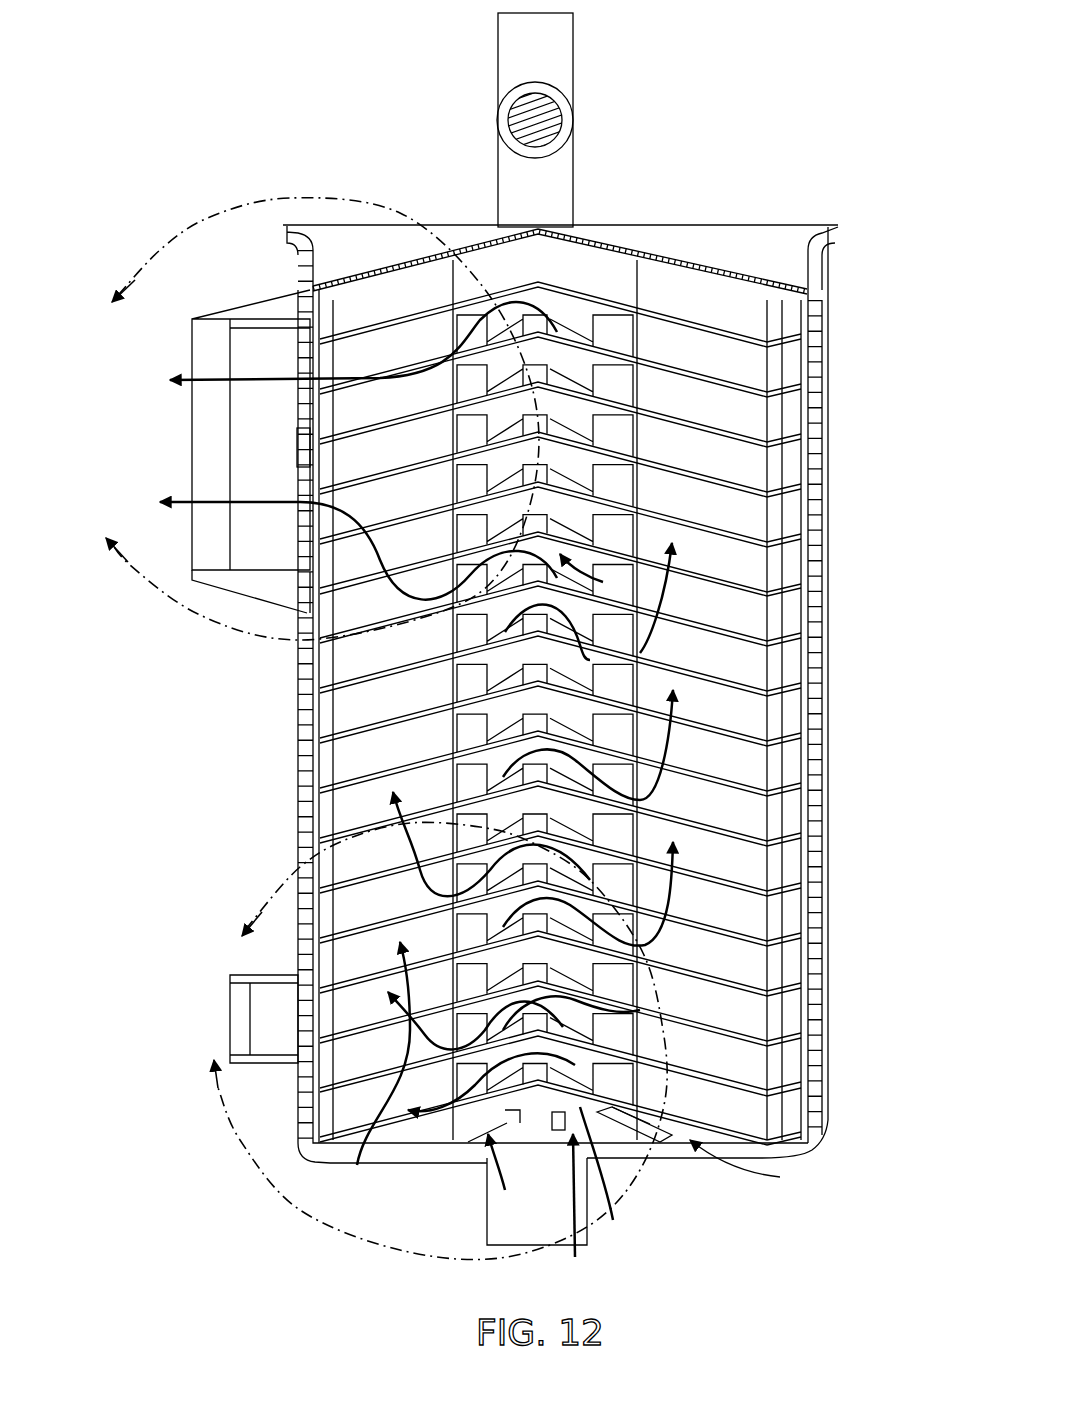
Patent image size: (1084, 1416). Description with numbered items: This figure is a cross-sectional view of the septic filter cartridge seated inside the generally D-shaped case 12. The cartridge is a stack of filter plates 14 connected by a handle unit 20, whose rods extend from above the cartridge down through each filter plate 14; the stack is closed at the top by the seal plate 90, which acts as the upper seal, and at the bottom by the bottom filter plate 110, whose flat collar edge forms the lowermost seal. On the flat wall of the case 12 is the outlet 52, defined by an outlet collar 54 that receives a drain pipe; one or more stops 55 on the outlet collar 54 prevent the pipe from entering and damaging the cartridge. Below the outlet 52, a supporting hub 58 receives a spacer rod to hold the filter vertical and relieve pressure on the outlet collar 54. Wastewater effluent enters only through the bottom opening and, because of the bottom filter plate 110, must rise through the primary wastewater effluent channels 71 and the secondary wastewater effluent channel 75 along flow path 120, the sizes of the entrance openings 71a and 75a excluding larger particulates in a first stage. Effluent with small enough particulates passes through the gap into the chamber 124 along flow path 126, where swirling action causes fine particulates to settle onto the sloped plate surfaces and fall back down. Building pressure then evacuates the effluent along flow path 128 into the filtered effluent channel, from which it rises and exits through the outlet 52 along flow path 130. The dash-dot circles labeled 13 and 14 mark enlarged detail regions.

The case 12 is at (830, 452).
The detail region 13 is at (421, 1040).
The filter plates 14 is at (848, 358).
The handle unit 20 is at (575, 60).
The outlet 52 is at (210, 356).
The outlet collar 54 is at (250, 583).
The stops 55 is at (297, 448).
The supporting hub 58 is at (263, 975).
The primary wastewater effluent channels 71 is at (527, 1177).
The entrance openings 71a is at (510, 1149).
The secondary wastewater effluent channel 75 is at (635, 1126).
The entrance opening 75a is at (626, 1140).
The seal plate 90 is at (718, 272).
The bottom filter plate 110 is at (610, 1179).
The flow path 120 is at (487, 1160).
The chamber 124 is at (590, 658).
The flow path 126 is at (500, 778).
The flow path 128 is at (645, 947).
The flow path 130 is at (262, 381).